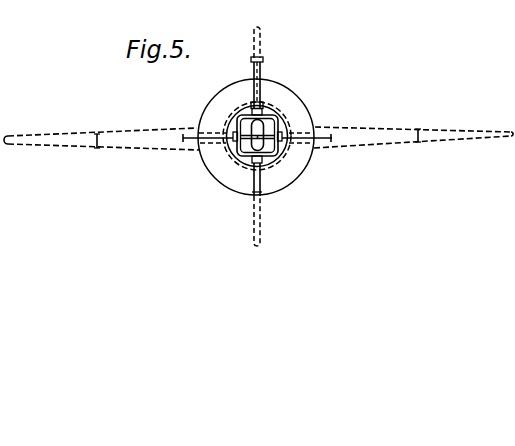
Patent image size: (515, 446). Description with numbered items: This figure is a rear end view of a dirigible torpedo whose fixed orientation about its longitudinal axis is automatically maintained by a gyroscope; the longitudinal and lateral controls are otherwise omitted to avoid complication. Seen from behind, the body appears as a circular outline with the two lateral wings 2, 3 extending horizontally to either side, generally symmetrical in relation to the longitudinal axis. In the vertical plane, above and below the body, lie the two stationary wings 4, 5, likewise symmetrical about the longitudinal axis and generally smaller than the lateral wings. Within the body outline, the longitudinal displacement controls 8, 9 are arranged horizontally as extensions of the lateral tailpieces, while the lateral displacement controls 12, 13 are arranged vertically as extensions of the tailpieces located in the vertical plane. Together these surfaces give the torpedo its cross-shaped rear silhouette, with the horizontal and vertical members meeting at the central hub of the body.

The lateral wing 2 is at (137, 135).
The lateral wing 3 is at (390, 129).
The stationary wing 4 is at (261, 41).
The stationary wing 5 is at (262, 238).
The longitudinal displacement control 8 is at (188, 133).
The longitudinal displacement control 9 is at (333, 134).
The lateral displacement control 12 is at (262, 80).
The lateral displacement control 13 is at (262, 190).